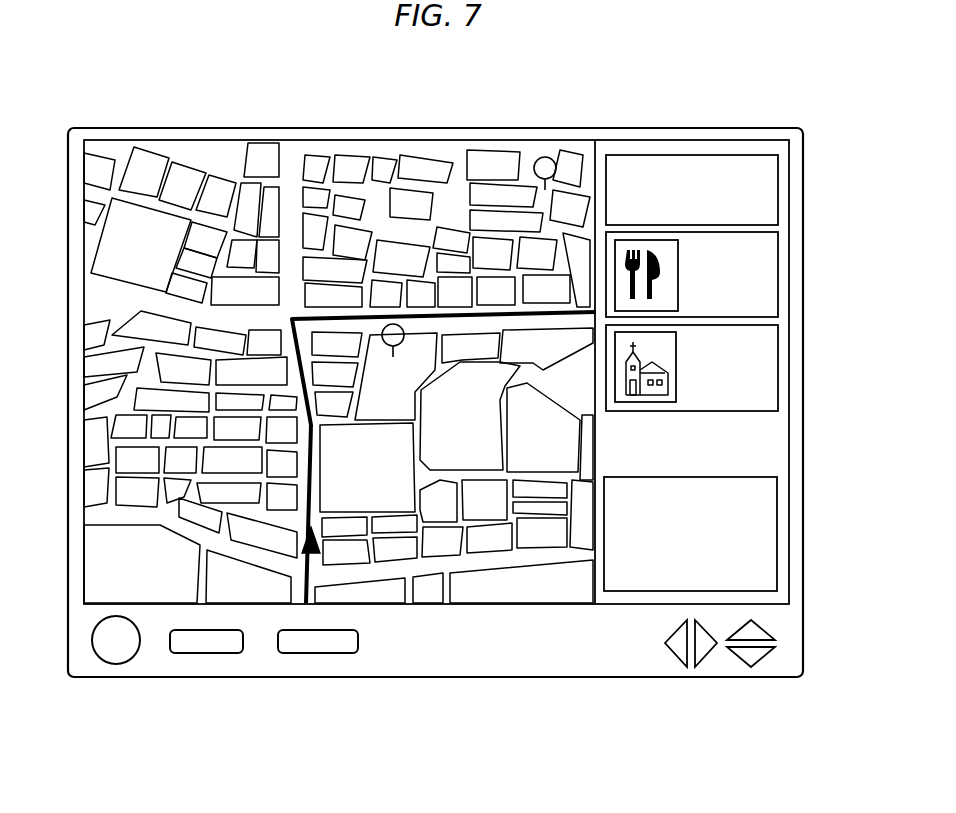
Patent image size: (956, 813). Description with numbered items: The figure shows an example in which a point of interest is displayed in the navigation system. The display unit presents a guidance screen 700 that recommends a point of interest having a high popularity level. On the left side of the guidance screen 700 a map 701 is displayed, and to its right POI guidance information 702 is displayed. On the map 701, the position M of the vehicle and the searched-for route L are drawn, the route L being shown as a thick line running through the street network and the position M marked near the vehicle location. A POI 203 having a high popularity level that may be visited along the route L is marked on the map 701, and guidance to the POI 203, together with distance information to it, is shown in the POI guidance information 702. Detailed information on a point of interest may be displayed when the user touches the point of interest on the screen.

The guidance screen 700 is at (540, 606).
The map 701 is at (291, 128).
The POI guidance information 702 is at (612, 141).
The POI 203 is at (393, 324).
The searched-for route L is at (312, 548).
The position of the vehicle M is at (316, 546).